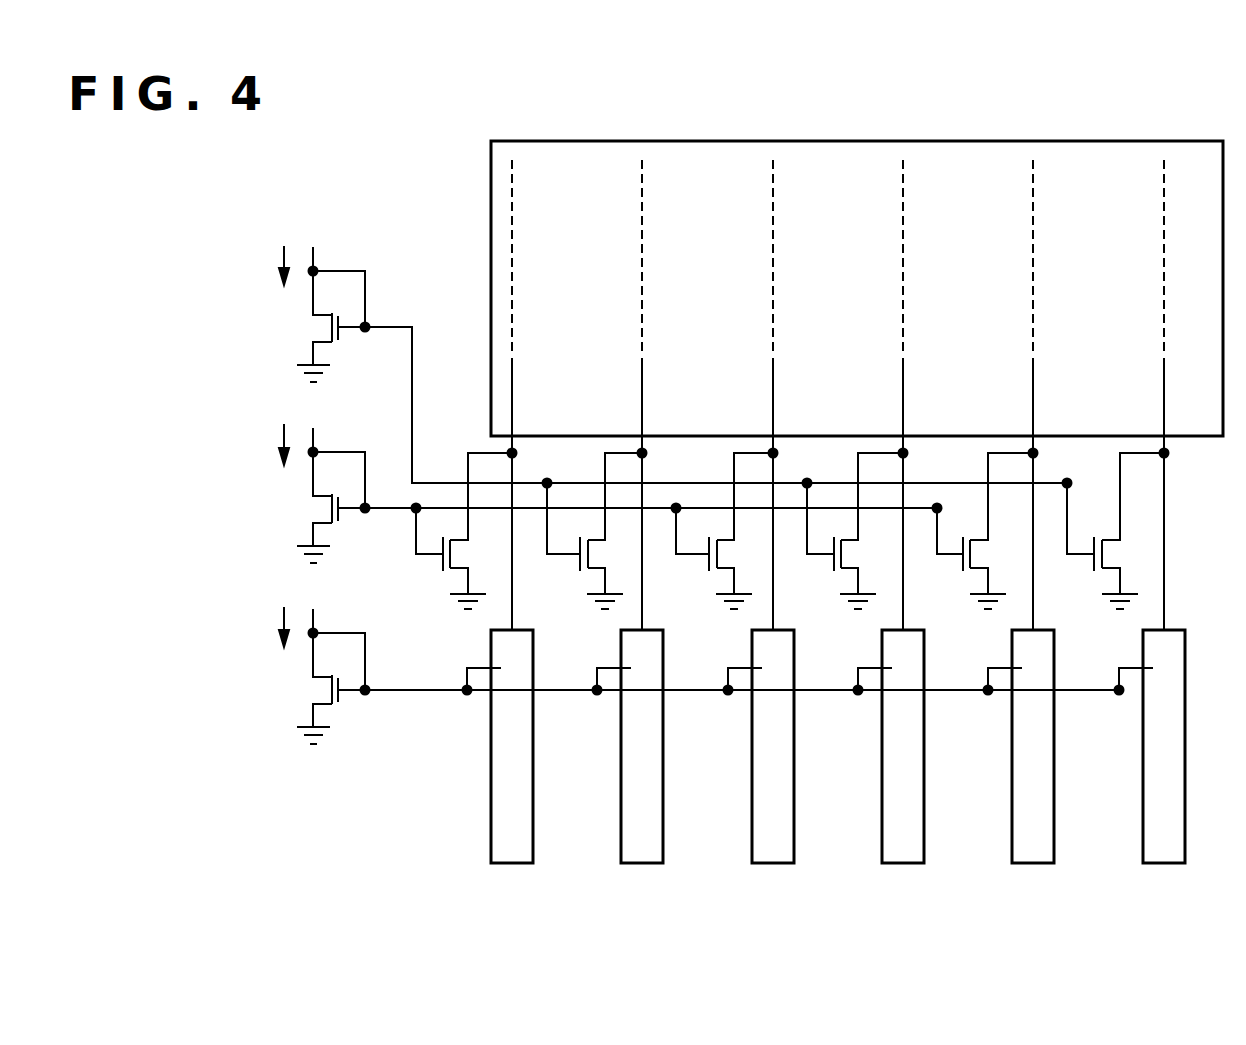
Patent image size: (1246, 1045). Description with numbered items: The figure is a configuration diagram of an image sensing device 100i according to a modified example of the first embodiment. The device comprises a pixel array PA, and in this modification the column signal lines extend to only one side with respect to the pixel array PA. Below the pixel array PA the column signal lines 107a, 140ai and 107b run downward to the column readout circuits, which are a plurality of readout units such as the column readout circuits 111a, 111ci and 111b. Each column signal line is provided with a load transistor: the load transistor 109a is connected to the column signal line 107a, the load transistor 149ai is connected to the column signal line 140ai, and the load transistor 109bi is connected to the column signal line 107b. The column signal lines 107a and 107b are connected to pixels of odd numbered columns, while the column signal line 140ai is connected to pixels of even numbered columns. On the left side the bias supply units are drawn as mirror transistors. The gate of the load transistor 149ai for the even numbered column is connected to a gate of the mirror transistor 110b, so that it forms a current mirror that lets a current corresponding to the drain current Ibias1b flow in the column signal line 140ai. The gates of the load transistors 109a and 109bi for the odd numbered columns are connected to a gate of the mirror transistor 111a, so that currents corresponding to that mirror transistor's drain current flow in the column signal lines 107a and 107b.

The image sensing device 100i is at (712, 566).
The mirror transistor 110b is at (370, 345).
The mirror transistor 111a is at (370, 526).
The load transistor 109a is at (432, 574).
The load transistor 149ai is at (569, 574).
The load transistor 109bi is at (698, 574).
The column signal line 107a is at (526, 385).
The column signal line 140ai is at (656, 385).
The column signal line 107b is at (786, 385).
The column amplifier 111ci is at (642, 864).
The column readout circuit 111b is at (773, 864).
The pixel array PA is at (1190, 128).